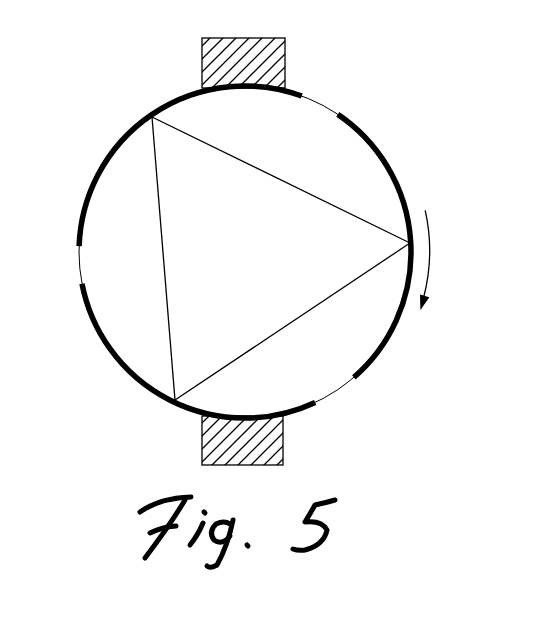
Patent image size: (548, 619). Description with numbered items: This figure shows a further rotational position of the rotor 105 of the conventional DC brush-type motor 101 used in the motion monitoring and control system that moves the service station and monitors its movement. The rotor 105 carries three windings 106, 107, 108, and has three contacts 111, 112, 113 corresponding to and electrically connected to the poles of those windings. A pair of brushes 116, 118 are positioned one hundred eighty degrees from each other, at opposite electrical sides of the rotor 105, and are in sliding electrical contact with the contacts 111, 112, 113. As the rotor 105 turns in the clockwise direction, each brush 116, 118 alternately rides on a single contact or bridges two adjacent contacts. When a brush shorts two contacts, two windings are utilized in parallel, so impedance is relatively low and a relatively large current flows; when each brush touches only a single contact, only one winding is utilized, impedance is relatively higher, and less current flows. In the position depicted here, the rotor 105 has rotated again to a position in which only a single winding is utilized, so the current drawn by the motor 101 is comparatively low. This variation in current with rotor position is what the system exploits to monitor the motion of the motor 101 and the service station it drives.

The motor 101 is at (118, 70).
The rotor 105 is at (396, 168).
The winding 106 is at (275, 333).
The winding 107 is at (161, 245).
The winding 108 is at (297, 187).
The contact 111 is at (386, 160).
The contact 112 is at (138, 384).
The contact 113 is at (115, 143).
The brush 116 is at (282, 48).
The brush 118 is at (281, 464).